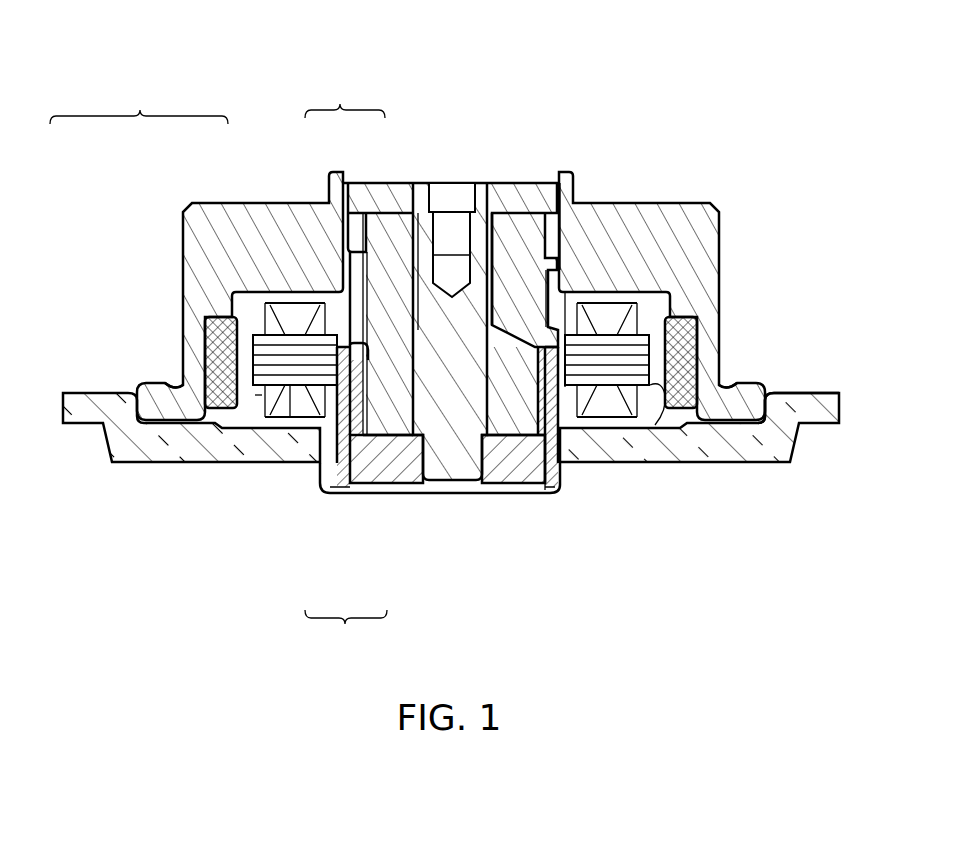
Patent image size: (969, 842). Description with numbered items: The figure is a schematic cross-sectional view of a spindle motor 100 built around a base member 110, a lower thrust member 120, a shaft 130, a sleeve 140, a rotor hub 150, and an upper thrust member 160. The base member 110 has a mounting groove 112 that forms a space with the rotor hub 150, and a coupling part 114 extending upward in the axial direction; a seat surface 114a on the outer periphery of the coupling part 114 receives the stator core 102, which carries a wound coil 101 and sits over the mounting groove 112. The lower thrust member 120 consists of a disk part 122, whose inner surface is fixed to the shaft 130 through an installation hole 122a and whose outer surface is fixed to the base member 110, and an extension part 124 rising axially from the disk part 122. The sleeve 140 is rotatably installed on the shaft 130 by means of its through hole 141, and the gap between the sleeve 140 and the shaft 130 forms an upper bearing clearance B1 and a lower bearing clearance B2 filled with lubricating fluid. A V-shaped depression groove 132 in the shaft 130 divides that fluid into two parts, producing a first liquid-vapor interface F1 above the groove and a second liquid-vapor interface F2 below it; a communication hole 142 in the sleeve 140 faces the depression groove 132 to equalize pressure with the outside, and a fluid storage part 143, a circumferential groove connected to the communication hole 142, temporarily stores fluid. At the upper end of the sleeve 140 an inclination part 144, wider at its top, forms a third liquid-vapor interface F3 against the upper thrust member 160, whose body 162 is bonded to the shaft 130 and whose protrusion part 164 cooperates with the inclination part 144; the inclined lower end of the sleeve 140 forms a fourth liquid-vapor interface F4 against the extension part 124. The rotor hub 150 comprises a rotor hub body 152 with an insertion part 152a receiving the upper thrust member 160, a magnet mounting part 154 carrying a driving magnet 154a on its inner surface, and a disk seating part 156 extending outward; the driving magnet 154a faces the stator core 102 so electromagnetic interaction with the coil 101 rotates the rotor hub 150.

The spindle motor 100 is at (241, 55).
The rotor hub 150 is at (139, 102).
The rotor hub body 152 is at (232, 222).
The insertion part 152a is at (556, 196).
The magnet mounting part 154 is at (190, 352).
The driving magnet 154a is at (698, 342).
The disk seating part 156 is at (150, 387).
The upper thrust member 160 is at (432, 129).
The body 162 is at (383, 197).
The protrusion part 164 is at (342, 178).
The first liquid-vapor interface F1 is at (346, 268).
The through hole 141 is at (419, 225).
The upper bearing clearance B1 is at (490, 300).
The sleeve 140 is at (512, 235).
The third liquid-vapor interface F3 is at (548, 240).
The inclination part 144 is at (550, 282).
The communication hole 142 is at (620, 330).
The fluid storage part 143 is at (598, 332).
The base member 110 is at (195, 448).
The mounting groove 112 is at (770, 408).
The second liquid-vapor interface F2 is at (262, 396).
The seat surface 114a is at (312, 372).
The extension part 124 is at (340, 422).
The disk part 122 is at (381, 466).
The installation hole 122a is at (430, 460).
The lower thrust member 120 is at (346, 630).
The shaft 130 is at (455, 456).
The lower bearing clearance B2 is at (490, 456).
The depression groove 132 is at (504, 472).
The fourth liquid-vapor interface F4 is at (543, 490).
The coupling part 114 is at (571, 465).
The coil 101 is at (607, 406).
The stator core 102 is at (658, 398).